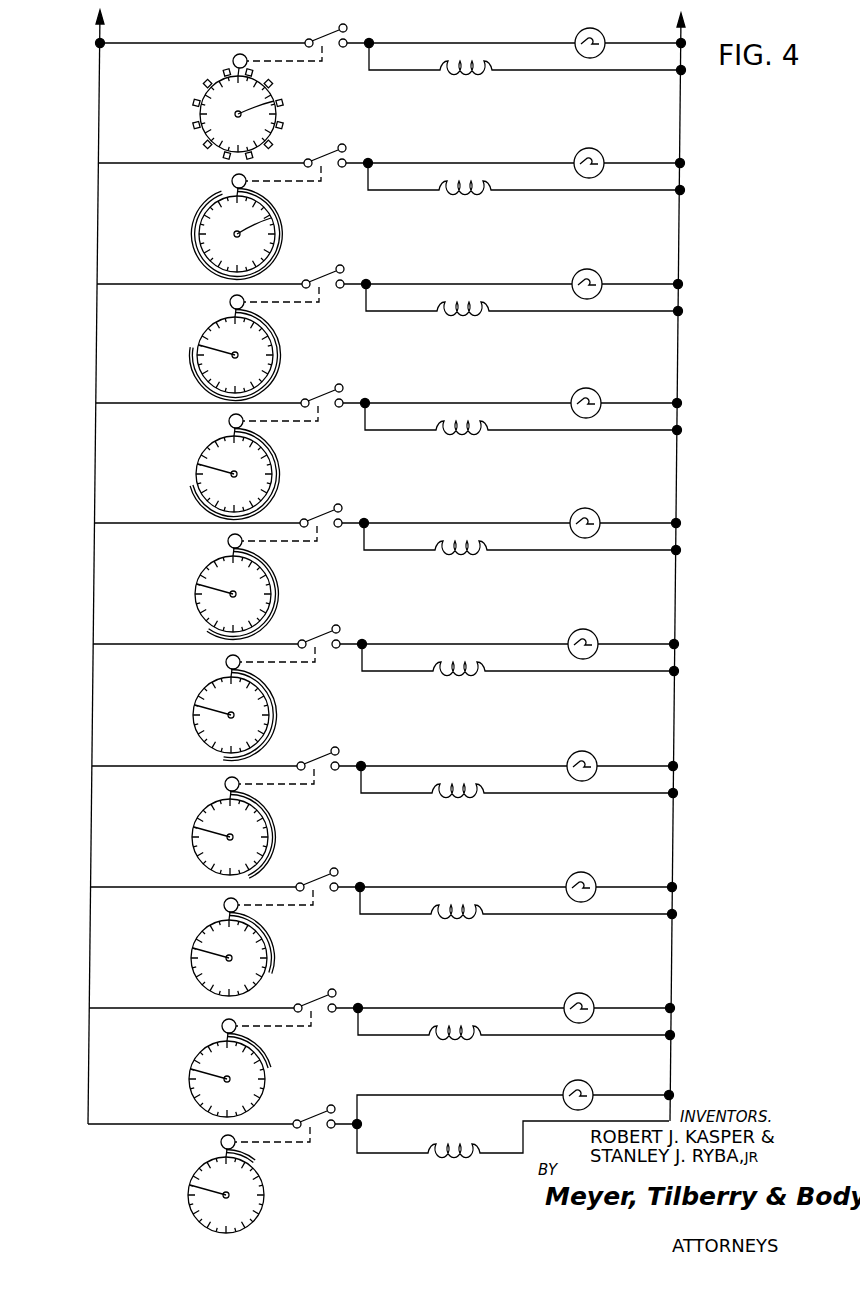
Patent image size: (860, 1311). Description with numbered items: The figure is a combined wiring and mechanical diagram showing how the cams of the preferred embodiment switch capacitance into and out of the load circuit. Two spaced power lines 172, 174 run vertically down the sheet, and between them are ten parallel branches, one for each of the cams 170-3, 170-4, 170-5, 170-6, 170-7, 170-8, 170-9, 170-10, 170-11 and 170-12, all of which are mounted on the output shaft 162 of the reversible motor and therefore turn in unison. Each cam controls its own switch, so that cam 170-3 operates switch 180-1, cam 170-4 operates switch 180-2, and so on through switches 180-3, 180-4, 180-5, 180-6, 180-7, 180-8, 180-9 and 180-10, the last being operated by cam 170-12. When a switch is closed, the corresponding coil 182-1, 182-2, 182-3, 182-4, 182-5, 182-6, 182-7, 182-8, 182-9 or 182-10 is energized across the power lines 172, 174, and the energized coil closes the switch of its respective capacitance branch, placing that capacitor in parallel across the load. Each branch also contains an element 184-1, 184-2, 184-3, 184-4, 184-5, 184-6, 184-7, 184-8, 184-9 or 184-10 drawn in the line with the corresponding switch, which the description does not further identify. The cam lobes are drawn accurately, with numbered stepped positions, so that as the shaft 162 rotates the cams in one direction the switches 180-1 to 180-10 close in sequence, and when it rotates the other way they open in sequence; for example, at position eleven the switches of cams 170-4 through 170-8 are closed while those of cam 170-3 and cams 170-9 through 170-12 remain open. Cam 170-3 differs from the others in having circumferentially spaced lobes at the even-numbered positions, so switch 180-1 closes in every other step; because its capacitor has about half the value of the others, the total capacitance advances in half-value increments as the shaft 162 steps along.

The power line 172 is at (100, 79).
The power line 174 is at (681, 141).
The output shaft 162 is at (172, 69).
The cam 170-3 is at (277, 83).
The cam 170-4 is at (275, 234).
The cam 170-5 is at (278, 355).
The cam 170-6 is at (272, 473).
The cam 170-7 is at (274, 594).
The cam 170-8 is at (280, 715).
The cam 170-9 is at (274, 835).
The cam 170-10 is at (277, 954).
The cam 170-11 is at (274, 1076).
The cam 170-12 is at (272, 1192).
The switch 180-1 is at (325, 0).
The switch 180-2 is at (332, 160).
The switch 180-3 is at (331, 282).
The switch 180-4 is at (341, 404).
The switch 180-5 is at (334, 519).
The switch 180-6 is at (330, 633).
The switch 180-7 is at (331, 765).
The switch 180-8 is at (328, 885).
The switch 180-9 is at (326, 1006).
The switch 180-10 is at (336, 1102).
The coil 182-1 is at (456, 17).
The coil 182-2 is at (471, 155).
The coil 182-3 is at (474, 285).
The coil 182-4 is at (481, 404).
The coil 182-5 is at (476, 524).
The coil 182-6 is at (471, 644).
The coil 182-7 is at (475, 766).
The coil 182-8 is at (475, 886).
The coil 182-9 is at (471, 1010).
The coil 182-10 is at (440, 1130).
The indicator lamp 184-1 is at (625, 36).
The indicator lamp 184-2 is at (604, 137).
The indicator lamp 184-3 is at (606, 264).
The indicator lamp 184-4 is at (604, 381).
The indicator lamp 184-5 is at (612, 508).
The indicator lamp 184-6 is at (572, 621).
The indicator lamp 184-7 is at (568, 739).
The indicator lamp 184-8 is at (568, 859).
The indicator lamp 184-9 is at (585, 986).
The indicator lamp 184-10 is at (573, 1077).